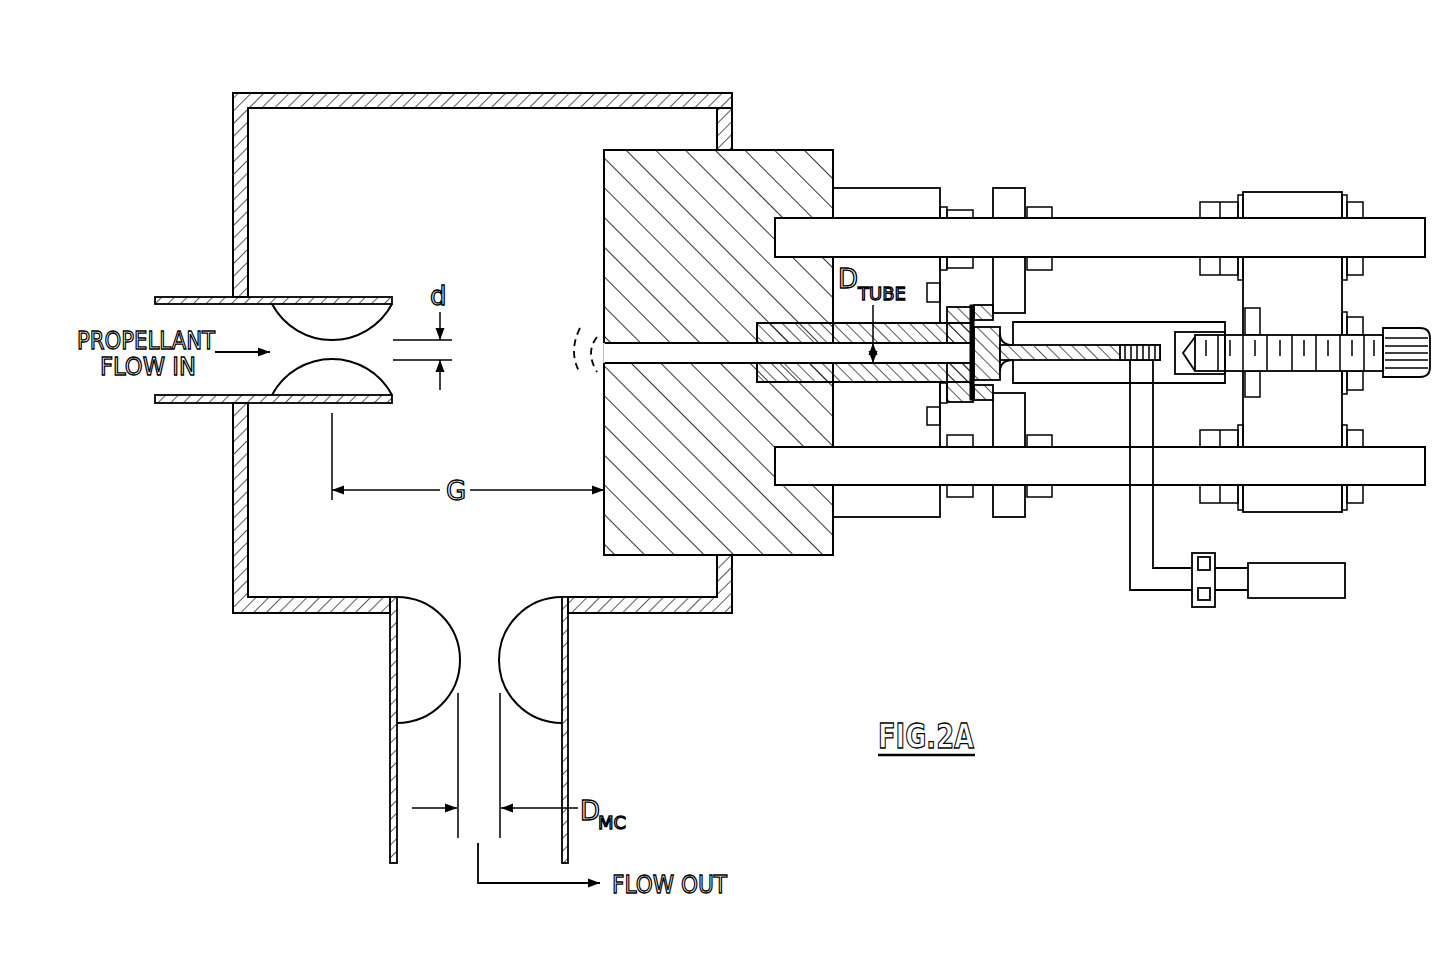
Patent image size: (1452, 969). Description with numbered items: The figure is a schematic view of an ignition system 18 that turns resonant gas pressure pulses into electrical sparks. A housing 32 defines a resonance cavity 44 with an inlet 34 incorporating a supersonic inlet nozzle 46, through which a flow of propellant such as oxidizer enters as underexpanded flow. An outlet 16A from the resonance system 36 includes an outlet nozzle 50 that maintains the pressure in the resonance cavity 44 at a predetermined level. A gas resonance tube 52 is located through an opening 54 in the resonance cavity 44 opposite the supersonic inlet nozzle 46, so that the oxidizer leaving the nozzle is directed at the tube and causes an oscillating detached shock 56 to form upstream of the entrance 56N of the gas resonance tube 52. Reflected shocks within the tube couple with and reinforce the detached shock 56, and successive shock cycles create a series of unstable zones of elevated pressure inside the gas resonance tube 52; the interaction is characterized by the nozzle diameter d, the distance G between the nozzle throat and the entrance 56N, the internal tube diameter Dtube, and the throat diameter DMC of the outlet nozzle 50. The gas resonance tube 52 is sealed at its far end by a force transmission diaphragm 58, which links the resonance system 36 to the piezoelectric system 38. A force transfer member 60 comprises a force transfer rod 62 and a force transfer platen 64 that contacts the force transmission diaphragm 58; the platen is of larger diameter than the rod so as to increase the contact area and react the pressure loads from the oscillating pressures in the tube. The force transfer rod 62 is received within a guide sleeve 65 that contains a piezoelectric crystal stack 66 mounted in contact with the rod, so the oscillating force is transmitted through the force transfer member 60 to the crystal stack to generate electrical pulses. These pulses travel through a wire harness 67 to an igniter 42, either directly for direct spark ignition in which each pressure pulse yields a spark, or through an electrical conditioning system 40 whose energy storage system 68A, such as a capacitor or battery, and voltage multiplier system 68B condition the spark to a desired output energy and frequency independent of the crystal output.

The outlet 16A is at (578, 770).
The ignition system 18 is at (1157, 97).
The housing 32 is at (503, 92).
The inlet 34 is at (186, 296).
The resonance system 36 is at (742, 96).
The piezoelectric system 38 is at (1119, 200).
The electrical conditioning system 40 is at (1201, 609).
The igniter 42 is at (1308, 562).
The resonance cavity 44 is at (463, 227).
The supersonic inlet nozzle 46 is at (351, 388).
The outlet nozzle 50 is at (557, 660).
The gas resonance tube 52 is at (765, 368).
The opening 54 is at (735, 560).
The detached shock 56 is at (566, 346).
The entrance 56N is at (599, 368).
The force transmission diaphragm 58 is at (983, 401).
The force transfer member 60 is at (1028, 342).
The force transfer rod 62 is at (1022, 362).
The force transfer platen 64 is at (985, 305).
The guide sleeve 65 is at (1107, 325).
The piezoelectric crystal stack 66 is at (1090, 364).
The wire harness 67 is at (1141, 592).
The energy storage system 68A is at (1204, 556).
The voltage multiplier system 68B is at (1210, 595).